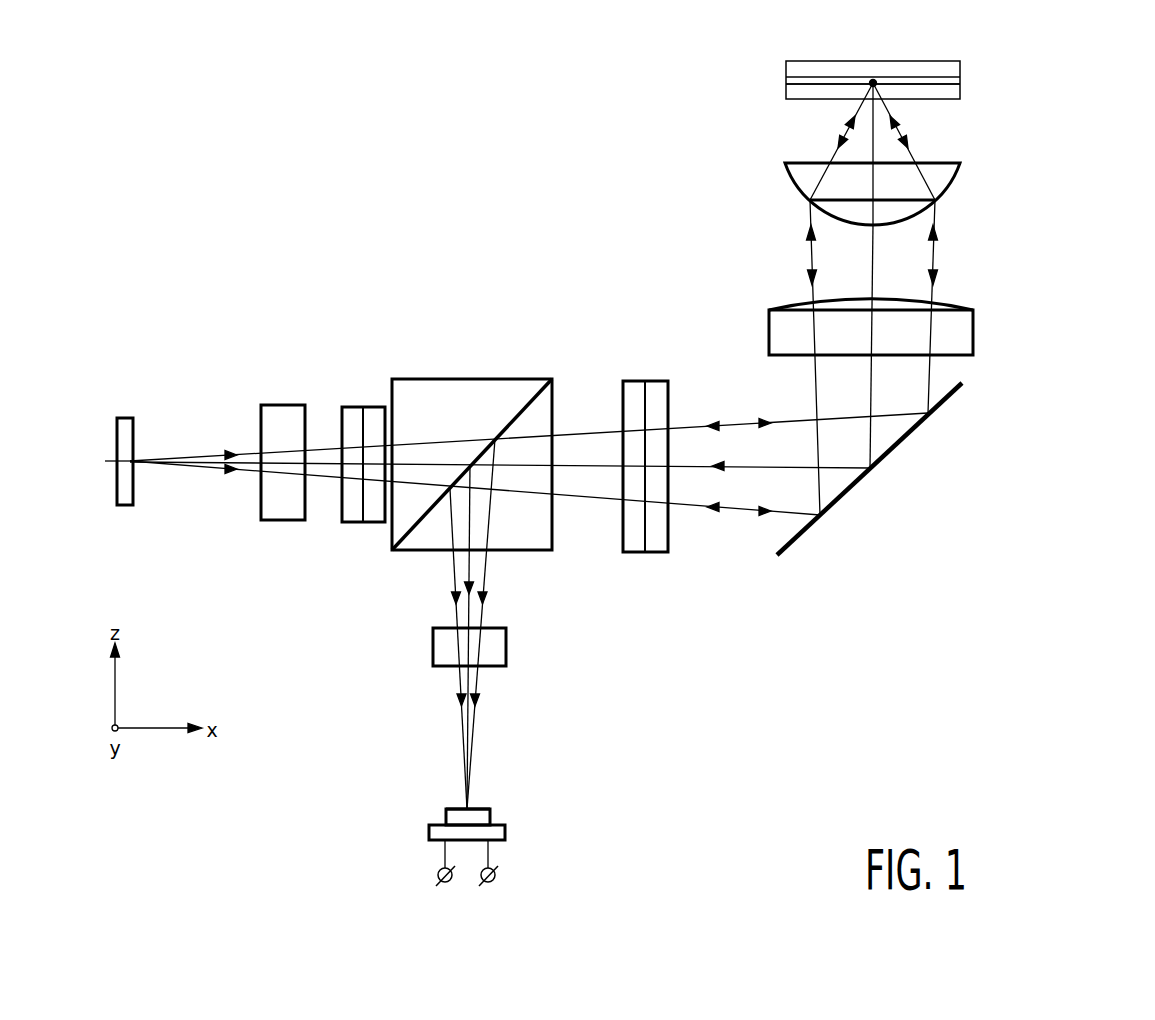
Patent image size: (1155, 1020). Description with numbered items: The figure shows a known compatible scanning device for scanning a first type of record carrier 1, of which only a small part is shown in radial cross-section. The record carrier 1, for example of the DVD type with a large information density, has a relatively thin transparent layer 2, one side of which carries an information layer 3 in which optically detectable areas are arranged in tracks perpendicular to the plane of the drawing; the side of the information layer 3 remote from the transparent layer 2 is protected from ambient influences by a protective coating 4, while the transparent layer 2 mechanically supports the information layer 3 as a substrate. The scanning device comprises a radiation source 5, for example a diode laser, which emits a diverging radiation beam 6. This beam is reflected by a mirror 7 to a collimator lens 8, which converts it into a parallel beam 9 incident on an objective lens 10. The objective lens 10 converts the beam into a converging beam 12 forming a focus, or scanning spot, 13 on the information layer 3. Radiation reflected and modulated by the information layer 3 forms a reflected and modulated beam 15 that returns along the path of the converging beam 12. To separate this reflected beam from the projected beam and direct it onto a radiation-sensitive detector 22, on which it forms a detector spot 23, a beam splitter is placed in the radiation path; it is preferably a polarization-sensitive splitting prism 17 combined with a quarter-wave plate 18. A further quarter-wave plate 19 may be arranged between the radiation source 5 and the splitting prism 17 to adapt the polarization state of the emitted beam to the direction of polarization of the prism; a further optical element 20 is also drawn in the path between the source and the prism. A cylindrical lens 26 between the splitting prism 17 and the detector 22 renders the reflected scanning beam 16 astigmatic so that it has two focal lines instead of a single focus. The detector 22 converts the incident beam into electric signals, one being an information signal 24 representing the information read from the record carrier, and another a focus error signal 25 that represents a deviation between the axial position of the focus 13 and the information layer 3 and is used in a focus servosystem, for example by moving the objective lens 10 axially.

The record carrier 1 is at (1050, 91).
The transparent layer 2 is at (788, 89).
The information layer 3 is at (960, 81).
The protective coating 4 is at (788, 69).
The radiation source 5 is at (127, 418).
The diverging radiation beam 6 is at (205, 468).
The mirror 7 is at (887, 457).
The collimator lens 8 is at (963, 333).
The parallel beam 9 is at (935, 258).
The objective lens 10 is at (943, 183).
The converging beam 12 is at (885, 130).
The scanning spot 13 is at (870, 85).
The reflected and modulated beam 15 is at (927, 162).
The reflected scanning beam 16 is at (470, 717).
The polarization-sensitive splitting prism 17 is at (460, 379).
The λ/4 plate 18 is at (640, 381).
The λ/4 plate 19 is at (358, 407).
The lens / beam shaper 20 is at (283, 405).
The radiation-sensitive detector 22 is at (490, 817).
The detector spot 23 is at (463, 808).
The information signal 24 is at (497, 876).
The focus error signal 25 is at (434, 876).
The cylindrical lens 26 is at (508, 646).